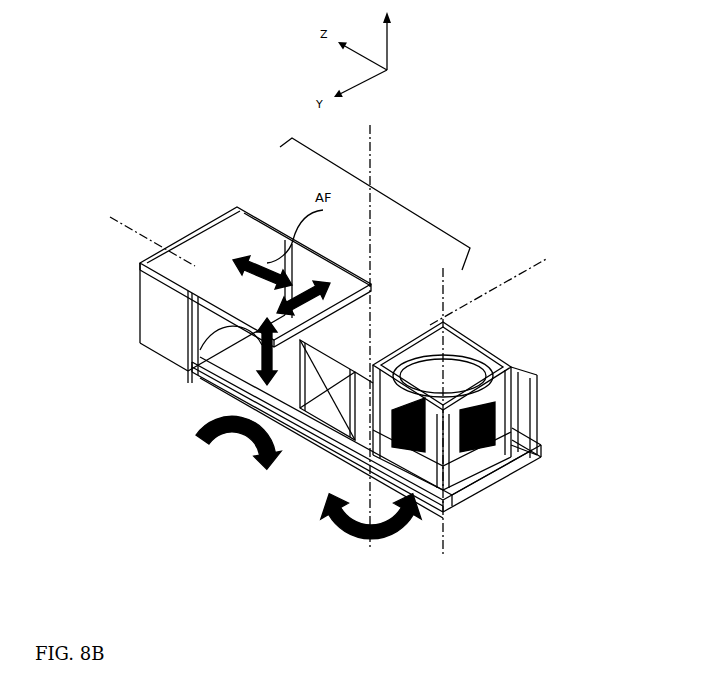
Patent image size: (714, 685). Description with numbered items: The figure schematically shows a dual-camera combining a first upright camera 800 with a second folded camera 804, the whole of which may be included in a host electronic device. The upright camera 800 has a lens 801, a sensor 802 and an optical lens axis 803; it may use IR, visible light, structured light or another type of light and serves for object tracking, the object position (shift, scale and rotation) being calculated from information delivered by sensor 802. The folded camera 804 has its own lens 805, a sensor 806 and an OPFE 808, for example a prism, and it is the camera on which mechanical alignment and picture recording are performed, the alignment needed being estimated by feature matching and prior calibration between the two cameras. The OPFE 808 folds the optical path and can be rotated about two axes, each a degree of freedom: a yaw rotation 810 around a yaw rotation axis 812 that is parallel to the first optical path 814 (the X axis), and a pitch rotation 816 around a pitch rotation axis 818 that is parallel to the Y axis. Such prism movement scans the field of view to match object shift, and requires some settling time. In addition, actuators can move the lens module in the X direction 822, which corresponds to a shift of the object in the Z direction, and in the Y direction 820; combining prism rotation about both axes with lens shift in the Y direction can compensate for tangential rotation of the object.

The first upright camera 800 is at (487, 343).
The lens 801 is at (494, 363).
The sensor 802 is at (487, 460).
The optical lens axis 803 is at (447, 517).
The second folded camera 804 is at (380, 192).
The lens 805 is at (185, 334).
The sensor 806 is at (223, 250).
The OPFE 808 is at (310, 440).
The yaw rotation 810 is at (378, 538).
The yaw rotation axis 812 is at (329, 364).
The first optical path 814 is at (363, 557).
The pitch rotation 816 is at (203, 446).
The pitch rotation axis 818 is at (233, 440).
The Y direction 820 is at (333, 287).
The X direction 822 is at (233, 368).